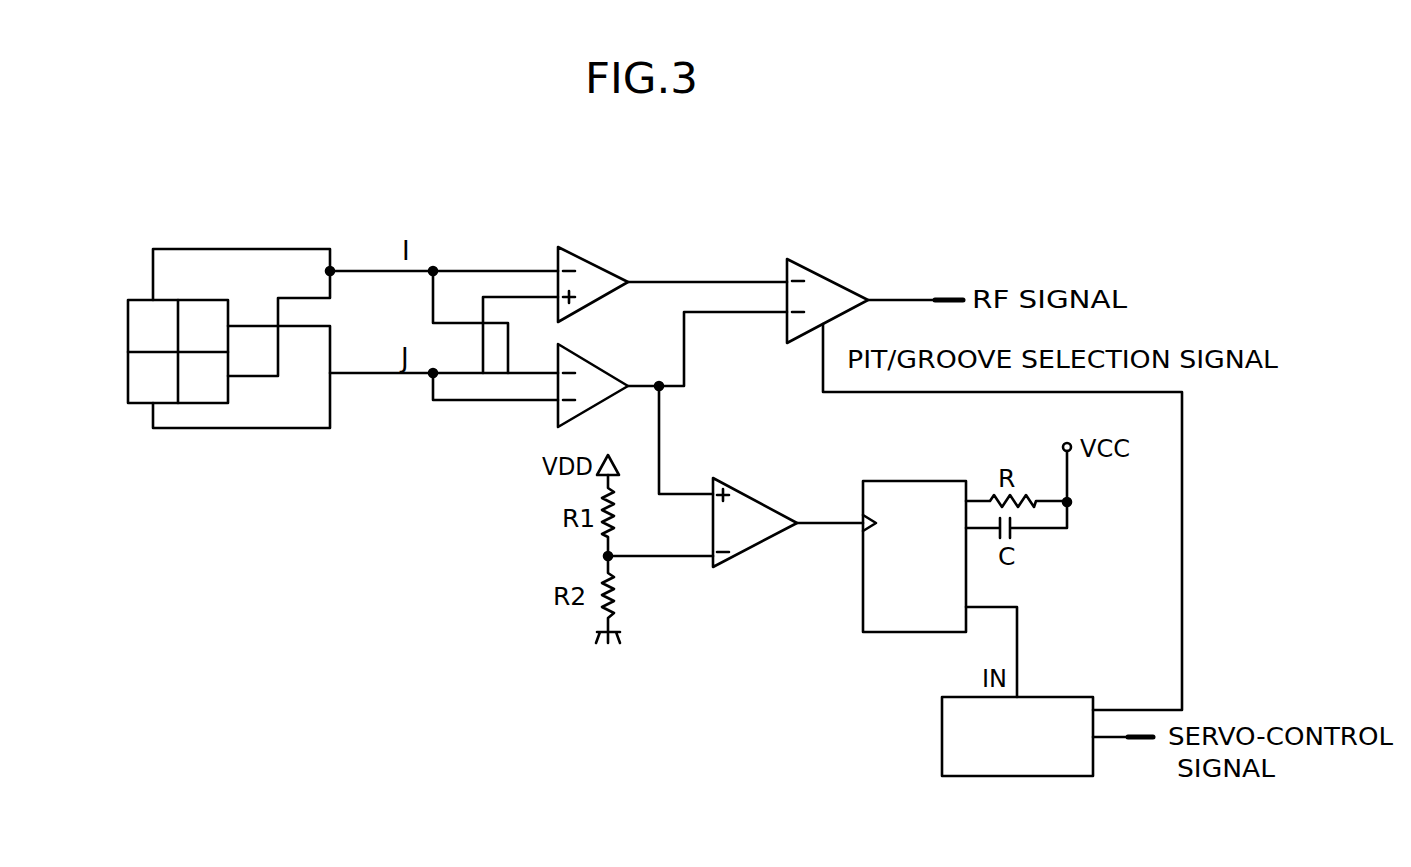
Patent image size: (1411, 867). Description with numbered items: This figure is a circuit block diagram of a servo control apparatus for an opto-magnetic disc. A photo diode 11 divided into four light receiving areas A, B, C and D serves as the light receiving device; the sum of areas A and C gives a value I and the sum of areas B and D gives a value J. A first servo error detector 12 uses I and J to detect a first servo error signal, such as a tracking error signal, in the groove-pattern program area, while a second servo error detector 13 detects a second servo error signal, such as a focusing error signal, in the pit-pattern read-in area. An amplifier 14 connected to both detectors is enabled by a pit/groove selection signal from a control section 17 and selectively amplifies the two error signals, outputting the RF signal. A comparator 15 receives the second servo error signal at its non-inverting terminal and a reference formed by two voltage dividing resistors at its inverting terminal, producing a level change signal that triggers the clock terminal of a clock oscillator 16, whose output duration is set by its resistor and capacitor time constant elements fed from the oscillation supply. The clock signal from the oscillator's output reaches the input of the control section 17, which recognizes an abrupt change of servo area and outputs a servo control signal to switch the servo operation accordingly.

The photo diode 11 is at (128, 346).
The first servo error detector 12 is at (603, 262).
The second servo error detector 13 is at (615, 367).
The amplifier 14 is at (837, 276).
The comparator 15 is at (762, 499).
The clock oscillator 16 is at (863, 615).
The control section 17 is at (1067, 697).